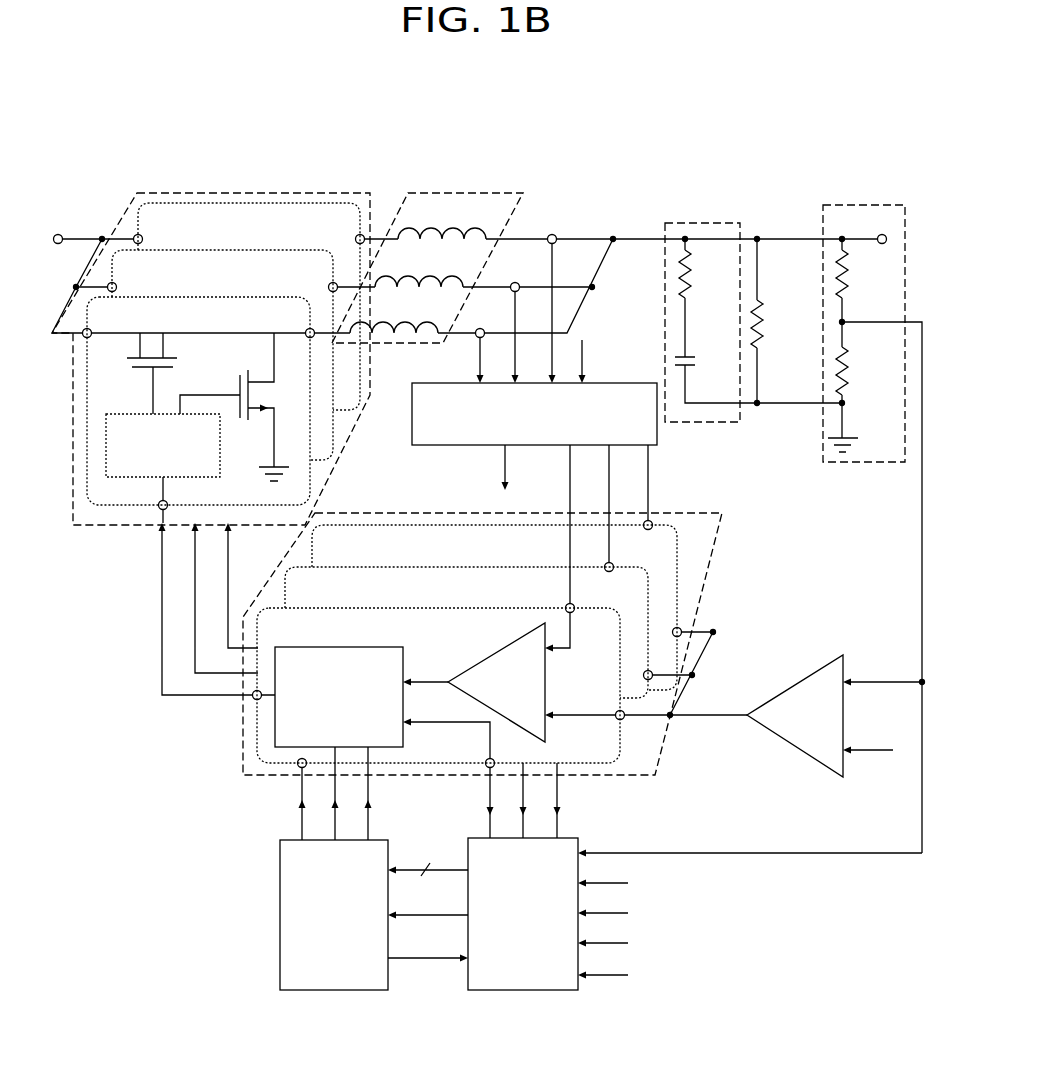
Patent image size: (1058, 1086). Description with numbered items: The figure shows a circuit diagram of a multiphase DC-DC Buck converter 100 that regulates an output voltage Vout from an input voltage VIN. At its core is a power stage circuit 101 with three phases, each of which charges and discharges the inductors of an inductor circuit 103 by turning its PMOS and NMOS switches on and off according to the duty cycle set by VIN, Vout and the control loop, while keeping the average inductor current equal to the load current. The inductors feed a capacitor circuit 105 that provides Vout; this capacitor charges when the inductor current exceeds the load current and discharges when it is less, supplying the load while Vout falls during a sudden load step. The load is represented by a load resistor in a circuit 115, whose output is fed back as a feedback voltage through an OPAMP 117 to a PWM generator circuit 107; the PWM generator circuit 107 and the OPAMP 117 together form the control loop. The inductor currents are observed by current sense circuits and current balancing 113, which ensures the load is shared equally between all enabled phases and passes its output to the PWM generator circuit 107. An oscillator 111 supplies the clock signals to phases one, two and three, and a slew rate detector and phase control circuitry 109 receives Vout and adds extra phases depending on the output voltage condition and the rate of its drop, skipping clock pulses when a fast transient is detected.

The multiphase DC-DC Buck converter 100 is at (872, 136).
The power stage circuit 101 is at (305, 193).
The inductor circuit 103 is at (468, 193).
The capacitor circuit 105 is at (705, 221).
The PWM generator circuit 107 is at (722, 513).
The slew rate detector and phase control circuitry 109 is at (523, 990).
The oscillator 111 is at (332, 990).
The current sense circuits and current balancing 113 is at (442, 445).
The circuit with load resistor 115 is at (867, 201).
The OPAMP 117 is at (798, 685).